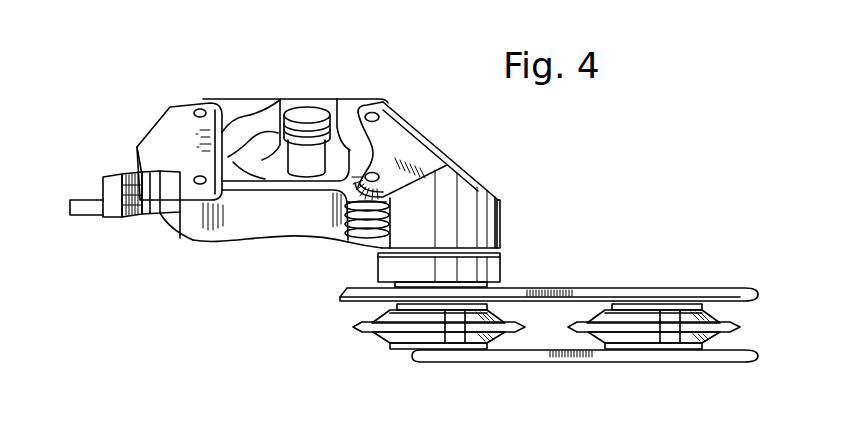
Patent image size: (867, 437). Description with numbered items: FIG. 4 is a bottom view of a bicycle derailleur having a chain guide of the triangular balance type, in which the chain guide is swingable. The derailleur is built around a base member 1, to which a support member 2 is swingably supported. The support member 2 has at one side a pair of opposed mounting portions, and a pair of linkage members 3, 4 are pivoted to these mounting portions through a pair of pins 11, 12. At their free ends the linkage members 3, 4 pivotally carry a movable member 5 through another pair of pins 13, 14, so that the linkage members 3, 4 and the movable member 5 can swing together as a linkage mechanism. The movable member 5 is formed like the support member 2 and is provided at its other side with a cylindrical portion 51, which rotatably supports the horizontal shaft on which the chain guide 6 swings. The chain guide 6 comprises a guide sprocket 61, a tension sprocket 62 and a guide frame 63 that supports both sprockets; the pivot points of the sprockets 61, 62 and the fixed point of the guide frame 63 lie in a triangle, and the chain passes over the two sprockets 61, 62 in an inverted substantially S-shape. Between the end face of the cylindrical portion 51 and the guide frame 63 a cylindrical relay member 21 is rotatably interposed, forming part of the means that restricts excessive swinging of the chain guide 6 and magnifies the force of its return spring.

The base member 1 is at (95, 215).
The support member 2 is at (152, 137).
The linkage member 3 is at (248, 103).
The linkage member 4 is at (282, 225).
The movable member 5 is at (428, 157).
The chain guide 6 is at (628, 287).
The pin 11 is at (200, 109).
The pin 12 is at (200, 185).
The pin 13 is at (372, 112).
The pin 14 is at (380, 177).
The cylindrical relay member 21 is at (500, 267).
The cylindrical portion 51 is at (500, 218).
The guide sprocket 61 is at (473, 337).
The tension sprocket 62 is at (685, 337).
The guide frame 63 is at (578, 290).